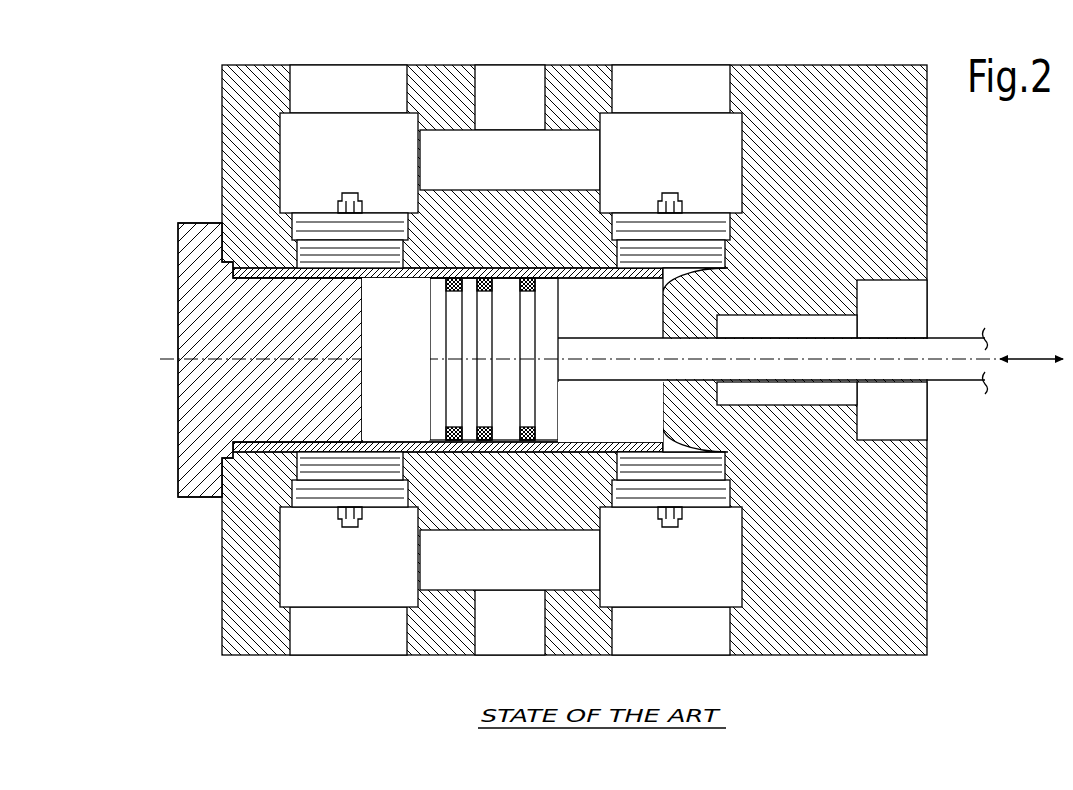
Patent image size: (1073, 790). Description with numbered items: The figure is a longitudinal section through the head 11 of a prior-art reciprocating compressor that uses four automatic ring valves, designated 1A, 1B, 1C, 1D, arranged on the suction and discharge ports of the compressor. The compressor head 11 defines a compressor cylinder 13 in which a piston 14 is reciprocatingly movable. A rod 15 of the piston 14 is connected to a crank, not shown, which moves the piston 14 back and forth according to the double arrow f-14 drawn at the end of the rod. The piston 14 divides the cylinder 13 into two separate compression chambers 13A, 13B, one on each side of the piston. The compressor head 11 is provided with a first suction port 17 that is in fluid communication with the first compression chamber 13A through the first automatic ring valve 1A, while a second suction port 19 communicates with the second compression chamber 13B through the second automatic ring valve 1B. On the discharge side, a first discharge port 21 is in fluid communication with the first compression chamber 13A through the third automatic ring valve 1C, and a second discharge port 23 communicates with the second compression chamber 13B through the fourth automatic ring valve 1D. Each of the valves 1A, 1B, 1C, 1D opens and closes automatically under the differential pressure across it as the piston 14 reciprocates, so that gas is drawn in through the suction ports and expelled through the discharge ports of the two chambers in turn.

The compressor head 11 is at (208, 613).
The compressor cylinder 13 is at (611, 290).
The first compression chamber 13A is at (385, 351).
The second compression chamber 13B is at (602, 417).
The piston 14 is at (510, 332).
The rod 15 is at (627, 347).
The first suction port 17 is at (337, 158).
The second suction port 19 is at (664, 158).
The first discharge port 21 is at (340, 601).
The second discharge port 23 is at (666, 606).
The first automatic ring valve 1A is at (386, 211).
The second automatic ring valve 1B is at (708, 211).
The third automatic ring valve 1C is at (388, 509).
The fourth automatic ring valve 1D is at (644, 509).
The double arrow f-14 is at (1031, 349).